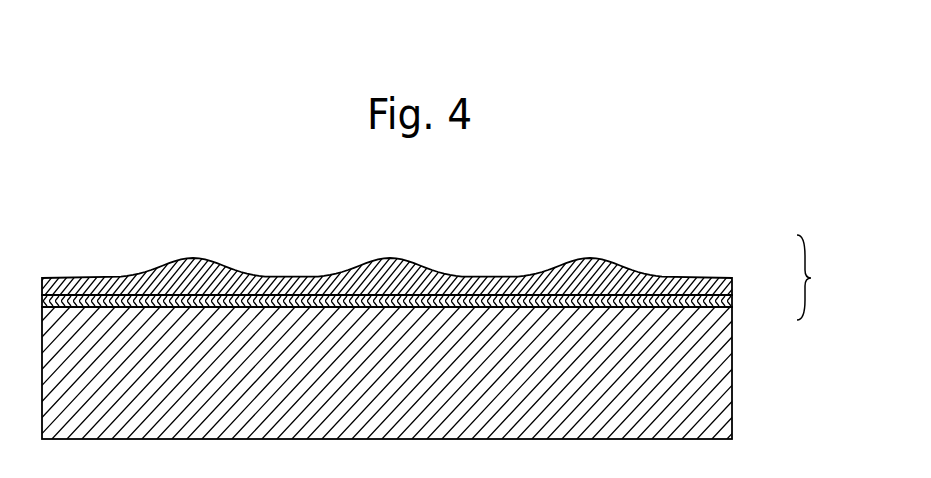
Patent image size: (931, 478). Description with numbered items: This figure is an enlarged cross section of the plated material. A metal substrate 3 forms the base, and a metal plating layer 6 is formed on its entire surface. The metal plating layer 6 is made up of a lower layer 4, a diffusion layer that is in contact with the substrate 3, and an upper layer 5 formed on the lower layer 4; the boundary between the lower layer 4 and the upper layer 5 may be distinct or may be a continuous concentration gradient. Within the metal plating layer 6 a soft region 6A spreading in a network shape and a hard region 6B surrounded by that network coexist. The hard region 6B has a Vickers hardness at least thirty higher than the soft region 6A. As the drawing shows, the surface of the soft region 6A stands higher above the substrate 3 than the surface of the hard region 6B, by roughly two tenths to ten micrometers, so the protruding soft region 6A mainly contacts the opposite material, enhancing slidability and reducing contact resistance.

The metal substrate 3 is at (713, 365).
The lower layer 4 is at (733, 299).
The upper layer 5 is at (733, 283).
The metal plating layer 6 is at (812, 277).
The soft region 6A is at (192, 257).
The hard region 6B is at (292, 278).